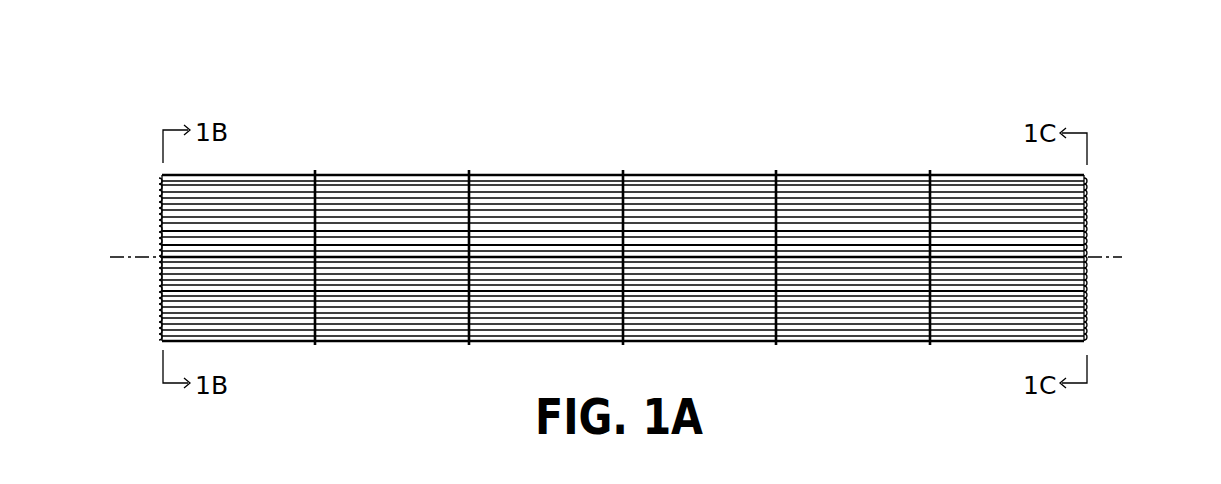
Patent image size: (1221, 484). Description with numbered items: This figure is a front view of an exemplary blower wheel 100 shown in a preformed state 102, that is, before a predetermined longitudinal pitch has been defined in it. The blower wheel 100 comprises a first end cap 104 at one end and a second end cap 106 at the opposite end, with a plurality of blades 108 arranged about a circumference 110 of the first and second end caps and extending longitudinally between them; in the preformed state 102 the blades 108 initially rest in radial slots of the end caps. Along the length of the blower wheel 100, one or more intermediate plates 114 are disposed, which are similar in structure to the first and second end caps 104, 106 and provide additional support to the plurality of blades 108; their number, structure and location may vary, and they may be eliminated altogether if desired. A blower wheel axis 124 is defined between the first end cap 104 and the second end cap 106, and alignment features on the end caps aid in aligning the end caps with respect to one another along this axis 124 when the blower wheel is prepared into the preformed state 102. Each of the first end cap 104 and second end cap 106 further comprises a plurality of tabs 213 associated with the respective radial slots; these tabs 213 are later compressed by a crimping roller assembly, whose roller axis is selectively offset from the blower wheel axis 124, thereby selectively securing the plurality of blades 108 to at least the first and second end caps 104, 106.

The blower wheel 100 is at (1082, 76).
The preformed state 102 is at (236, 90).
The first end cap 104 is at (158, 268).
The second end cap 106 is at (1087, 283).
The plurality of blades 108 is at (390, 197).
The circumference 110 is at (1100, 166).
The intermediate plates 114 is at (470, 172).
The blower wheel axis 124 is at (118, 255).
The plurality of tabs 213 is at (1085, 343).